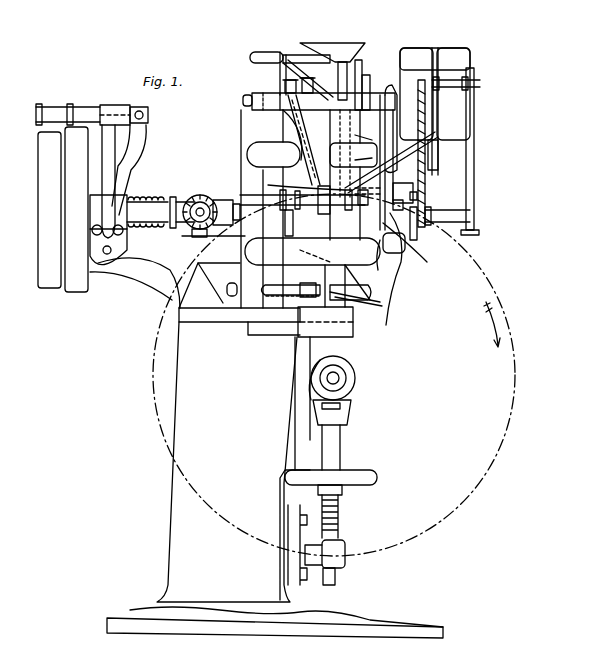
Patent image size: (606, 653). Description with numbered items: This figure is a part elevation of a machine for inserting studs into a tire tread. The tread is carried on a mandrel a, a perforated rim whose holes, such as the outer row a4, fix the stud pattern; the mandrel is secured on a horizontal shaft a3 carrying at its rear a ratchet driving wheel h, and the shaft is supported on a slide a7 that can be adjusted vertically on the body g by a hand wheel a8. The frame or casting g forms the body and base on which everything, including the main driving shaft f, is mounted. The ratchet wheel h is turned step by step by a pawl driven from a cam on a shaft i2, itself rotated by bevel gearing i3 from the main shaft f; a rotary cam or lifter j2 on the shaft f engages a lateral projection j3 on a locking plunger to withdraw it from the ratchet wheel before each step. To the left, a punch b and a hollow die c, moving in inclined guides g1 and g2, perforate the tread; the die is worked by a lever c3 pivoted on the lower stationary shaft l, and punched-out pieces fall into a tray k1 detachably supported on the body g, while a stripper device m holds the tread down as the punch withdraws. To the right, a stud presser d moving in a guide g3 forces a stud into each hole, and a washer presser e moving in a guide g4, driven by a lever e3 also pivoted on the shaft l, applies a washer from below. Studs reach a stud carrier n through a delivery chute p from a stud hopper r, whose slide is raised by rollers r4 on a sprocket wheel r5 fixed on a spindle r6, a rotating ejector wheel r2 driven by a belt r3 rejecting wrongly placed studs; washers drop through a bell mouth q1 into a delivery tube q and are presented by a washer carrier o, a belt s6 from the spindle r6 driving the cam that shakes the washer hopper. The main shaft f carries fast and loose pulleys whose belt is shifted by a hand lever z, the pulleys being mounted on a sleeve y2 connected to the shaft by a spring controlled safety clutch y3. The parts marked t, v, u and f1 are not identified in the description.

The hand actuating lever z is at (150, 114).
The sleeve y2 is at (148, 200).
The spring controlled safety clutch y3 is at (173, 198).
The main driving shaft f is at (186, 200).
The shaft i2 is at (200, 194).
The bevel gearing i3 is at (213, 200).
The frame or casting g is at (230, 176).
The lower stationary shaft l is at (226, 286).
The tray k1 is at (355, 335).
The horizontal shaft a3 is at (356, 378).
The slide a7 is at (346, 425).
The hand wheel a8 is at (370, 478).
The mandrel a is at (153, 350).
The punch b is at (262, 140).
The stripper device m is at (252, 112).
The ratchet driving wheel h is at (243, 99).
The arm t is at (262, 56).
The lateral projection j3 is at (288, 84).
The strut v is at (318, 68).
The bowl or bell mouth q1 is at (342, 45).
The delivery tube q is at (362, 62).
The outer row of perforations a4 is at (370, 90).
The inclined bearing or guide g1 is at (283, 140).
The stud presser d is at (367, 181).
The stud carrier n is at (384, 190).
The shaft u is at (278, 198).
The collar f1 is at (284, 218).
The inclined bearing or guide g2 is at (312, 251).
The die c is at (320, 274).
The die lever c3 is at (312, 287).
The washer presser lever e3 is at (367, 305).
The washer presser e is at (392, 270).
The washer carrier o is at (370, 235).
The bearing or guide g4 is at (360, 272).
The stud hopper r is at (484, 130).
The rotating ejector wheel r2 is at (436, 100).
The delivery chute p is at (440, 136).
The belt r3 is at (474, 148).
The rollers r4 is at (437, 167).
The rotary sprocket wheel r5 is at (425, 188).
The spindle r6 is at (405, 183).
The rotary cam or lifter j2 is at (413, 240).
The belt s6 is at (372, 140).
The bearing or guide g3 is at (372, 158).